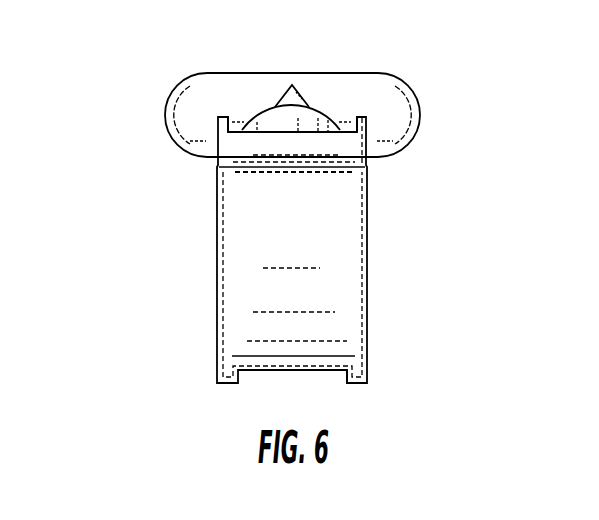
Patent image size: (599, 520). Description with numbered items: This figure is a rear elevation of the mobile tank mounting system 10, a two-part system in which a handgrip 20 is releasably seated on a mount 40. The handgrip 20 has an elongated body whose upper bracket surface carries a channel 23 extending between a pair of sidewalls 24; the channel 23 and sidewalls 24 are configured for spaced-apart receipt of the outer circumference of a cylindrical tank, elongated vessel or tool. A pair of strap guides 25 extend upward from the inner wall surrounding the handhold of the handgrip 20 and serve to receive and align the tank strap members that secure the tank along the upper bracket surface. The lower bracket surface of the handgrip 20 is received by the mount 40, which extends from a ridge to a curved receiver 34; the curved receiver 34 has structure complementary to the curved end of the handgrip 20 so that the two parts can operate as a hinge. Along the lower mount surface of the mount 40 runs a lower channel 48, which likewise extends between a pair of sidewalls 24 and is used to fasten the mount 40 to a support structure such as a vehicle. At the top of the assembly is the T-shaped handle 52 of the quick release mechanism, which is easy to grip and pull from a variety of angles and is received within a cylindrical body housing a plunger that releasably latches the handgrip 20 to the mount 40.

The applicator assembly 10 is at (79, 96).
The handgrip 20 is at (256, 148).
The channel 23 is at (229, 118).
The pair of sidewalls 24 is at (359, 383).
The strap guides 25 is at (368, 118).
The curved receiver 34 is at (320, 250).
The mount 40 is at (248, 298).
The lower channel 48 is at (323, 376).
The T-shaped handle 52 is at (370, 90).